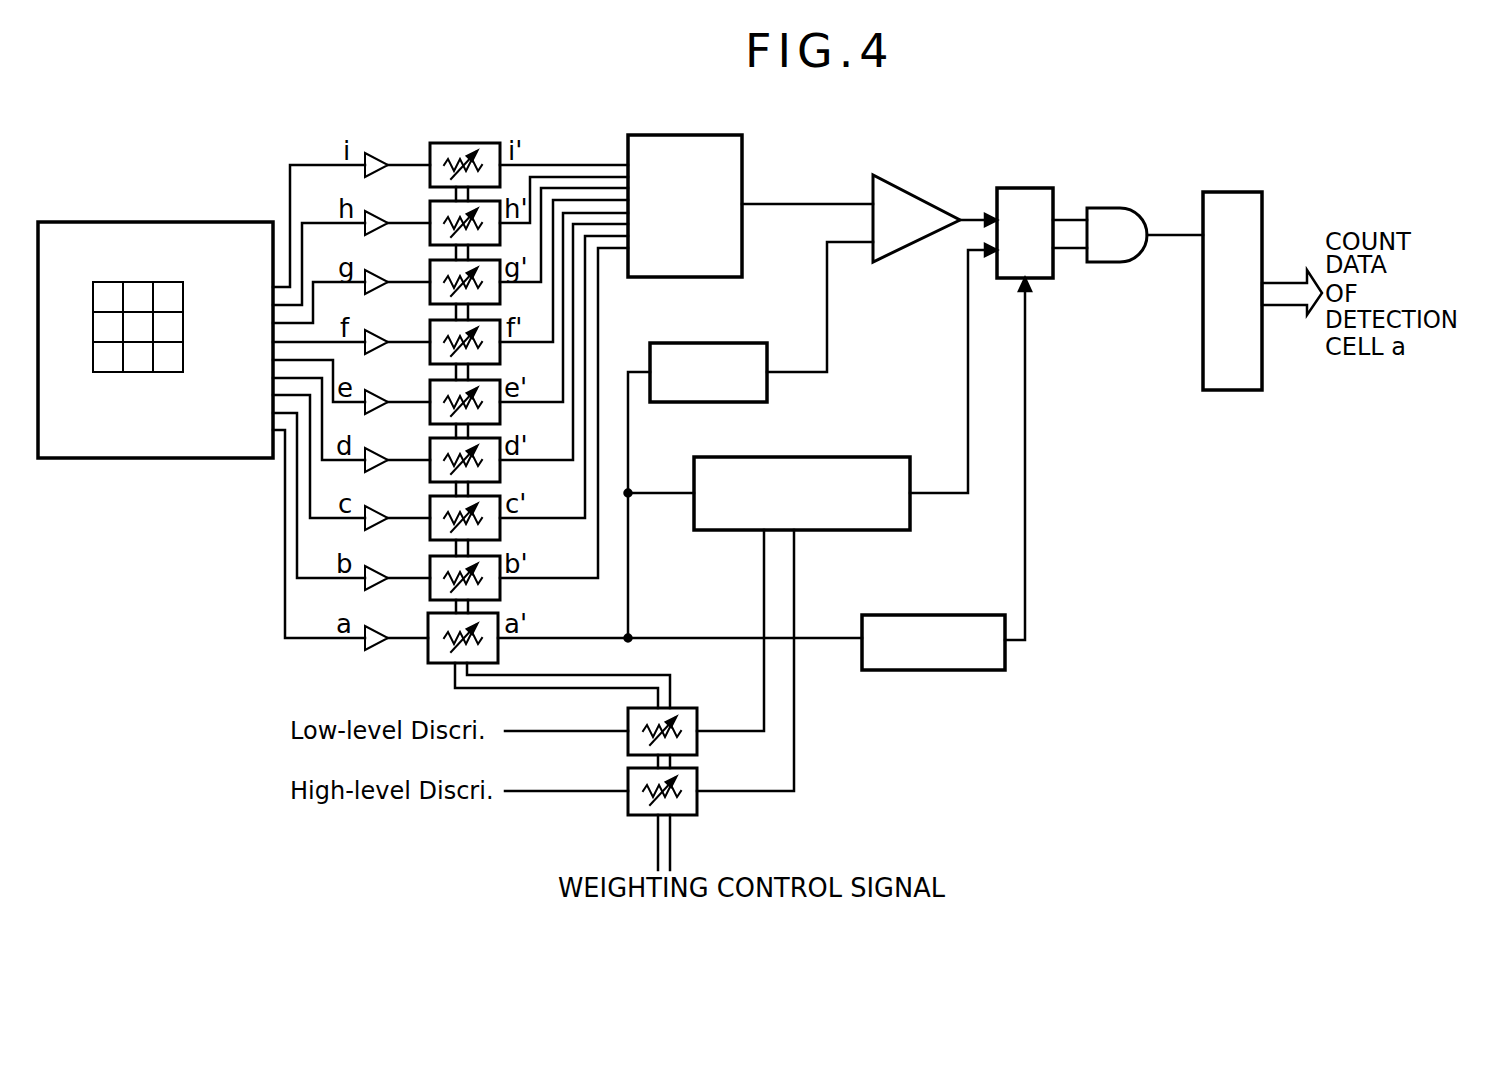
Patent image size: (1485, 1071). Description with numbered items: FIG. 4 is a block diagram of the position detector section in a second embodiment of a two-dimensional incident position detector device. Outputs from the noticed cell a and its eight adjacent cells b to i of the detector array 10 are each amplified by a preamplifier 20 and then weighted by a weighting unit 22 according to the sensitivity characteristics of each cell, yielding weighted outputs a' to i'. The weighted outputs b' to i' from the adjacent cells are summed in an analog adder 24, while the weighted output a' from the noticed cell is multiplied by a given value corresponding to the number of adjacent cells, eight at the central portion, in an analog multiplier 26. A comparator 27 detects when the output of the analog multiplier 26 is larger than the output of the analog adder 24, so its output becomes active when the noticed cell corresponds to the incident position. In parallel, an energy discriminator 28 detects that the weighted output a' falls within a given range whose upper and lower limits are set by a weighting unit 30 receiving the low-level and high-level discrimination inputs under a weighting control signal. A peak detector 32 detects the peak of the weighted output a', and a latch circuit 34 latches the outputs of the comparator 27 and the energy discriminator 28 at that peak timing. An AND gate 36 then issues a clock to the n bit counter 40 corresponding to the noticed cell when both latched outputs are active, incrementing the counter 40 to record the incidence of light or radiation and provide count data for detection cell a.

The detector array 10 is at (222, 222).
The preamplifier 20 is at (376, 153).
The weighting unit 22 is at (480, 143).
The analog adder 24 is at (703, 135).
The analog multiplier 26 is at (718, 402).
The comparator 27 is at (912, 180).
The energy discriminator 28 is at (872, 530).
The weighting unit 30 is at (697, 708).
The peak detector 32 is at (955, 670).
The latch circuit 34 is at (1037, 188).
The AND gate 36 is at (1113, 208).
The n bit counter 40 is at (1232, 192).